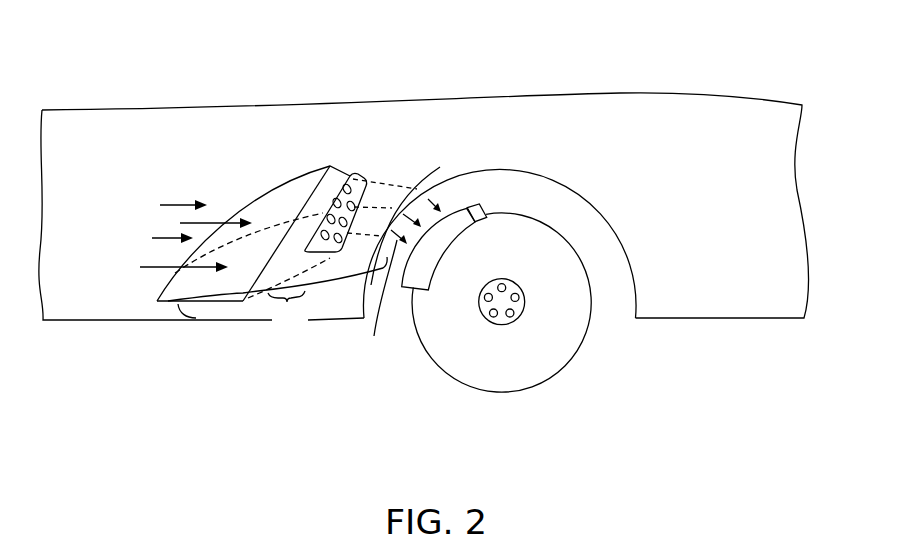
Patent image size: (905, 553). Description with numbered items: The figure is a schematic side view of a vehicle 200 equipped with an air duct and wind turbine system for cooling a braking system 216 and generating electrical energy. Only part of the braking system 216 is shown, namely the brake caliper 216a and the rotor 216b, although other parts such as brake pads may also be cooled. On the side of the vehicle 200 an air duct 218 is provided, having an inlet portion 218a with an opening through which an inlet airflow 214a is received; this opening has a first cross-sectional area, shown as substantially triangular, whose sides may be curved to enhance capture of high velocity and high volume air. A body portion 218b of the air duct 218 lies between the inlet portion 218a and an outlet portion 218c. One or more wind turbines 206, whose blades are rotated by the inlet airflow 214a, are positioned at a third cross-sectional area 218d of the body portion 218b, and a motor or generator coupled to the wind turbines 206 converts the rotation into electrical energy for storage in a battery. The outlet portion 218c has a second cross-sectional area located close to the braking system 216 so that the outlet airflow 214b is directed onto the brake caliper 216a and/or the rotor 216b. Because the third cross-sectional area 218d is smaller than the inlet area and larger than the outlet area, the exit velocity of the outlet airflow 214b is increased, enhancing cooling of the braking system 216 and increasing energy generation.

The vehicle 200 is at (178, 83).
The wind turbines 206 is at (352, 175).
The inlet airflow 214a is at (177, 203).
The outlet airflow 214b is at (374, 299).
The braking system 216 is at (385, 396).
The brake caliper 216a is at (480, 207).
The rotor 216b is at (448, 360).
The air duct 218 is at (272, 250).
The inlet portion 218a is at (167, 302).
The body portion 218b is at (341, 158).
The outlet portion 218c is at (428, 183).
The third cross-sectional area 218d is at (335, 249).